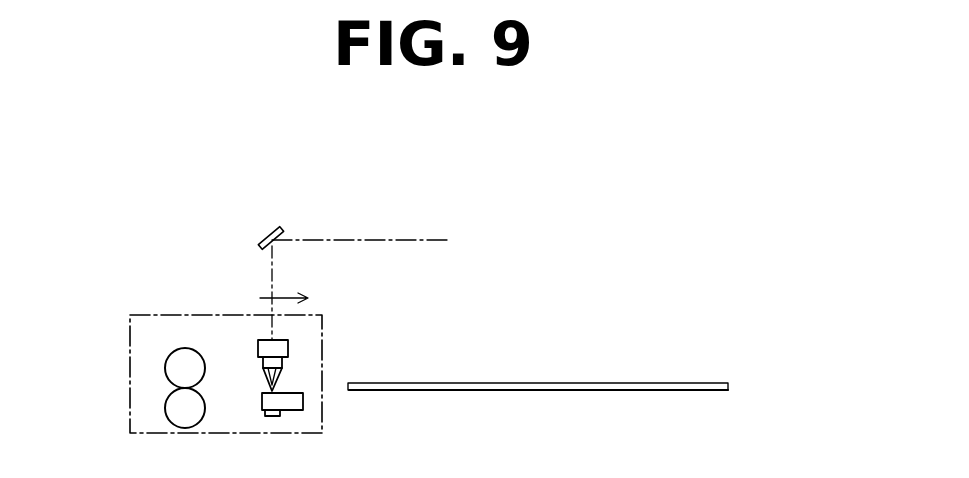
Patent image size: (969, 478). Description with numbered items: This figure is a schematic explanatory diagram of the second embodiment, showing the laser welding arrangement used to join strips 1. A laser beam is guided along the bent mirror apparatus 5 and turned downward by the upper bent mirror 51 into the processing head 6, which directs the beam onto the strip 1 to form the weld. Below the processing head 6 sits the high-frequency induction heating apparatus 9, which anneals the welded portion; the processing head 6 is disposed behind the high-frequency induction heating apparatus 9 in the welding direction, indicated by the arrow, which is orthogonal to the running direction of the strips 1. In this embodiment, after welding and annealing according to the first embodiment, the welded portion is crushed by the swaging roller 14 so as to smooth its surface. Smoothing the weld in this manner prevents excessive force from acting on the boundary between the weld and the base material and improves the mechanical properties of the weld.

The strip 1 is at (607, 383).
The bent mirror apparatus 5 is at (407, 240).
The processing head 6 is at (263, 340).
The high-frequency induction heating apparatus 9 is at (303, 399).
The swaging roller 14 is at (165, 364).
The upper bent mirror 51 is at (258, 238).